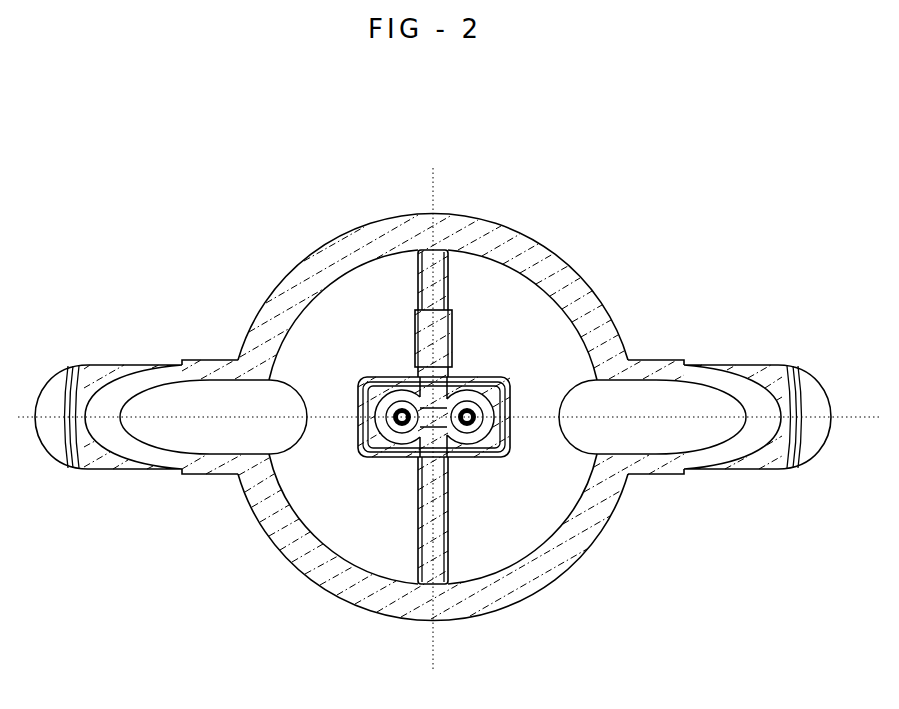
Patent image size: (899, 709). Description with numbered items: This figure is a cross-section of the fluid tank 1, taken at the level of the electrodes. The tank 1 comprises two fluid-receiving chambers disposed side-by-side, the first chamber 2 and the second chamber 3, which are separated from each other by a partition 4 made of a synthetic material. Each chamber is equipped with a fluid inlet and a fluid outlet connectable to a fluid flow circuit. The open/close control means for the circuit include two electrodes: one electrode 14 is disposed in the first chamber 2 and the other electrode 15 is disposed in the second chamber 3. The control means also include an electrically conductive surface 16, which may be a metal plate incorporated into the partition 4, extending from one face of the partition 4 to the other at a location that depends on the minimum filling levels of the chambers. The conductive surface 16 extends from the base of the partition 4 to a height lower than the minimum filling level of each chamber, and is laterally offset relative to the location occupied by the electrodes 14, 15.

The fluid tank 1 is at (618, 302).
The first chamber 2 is at (283, 272).
The second chamber 3 is at (550, 248).
The partition 4 is at (436, 212).
The electrode 14 is at (377, 458).
The electrode 15 is at (463, 460).
The electrically conductive surface 16 is at (508, 312).